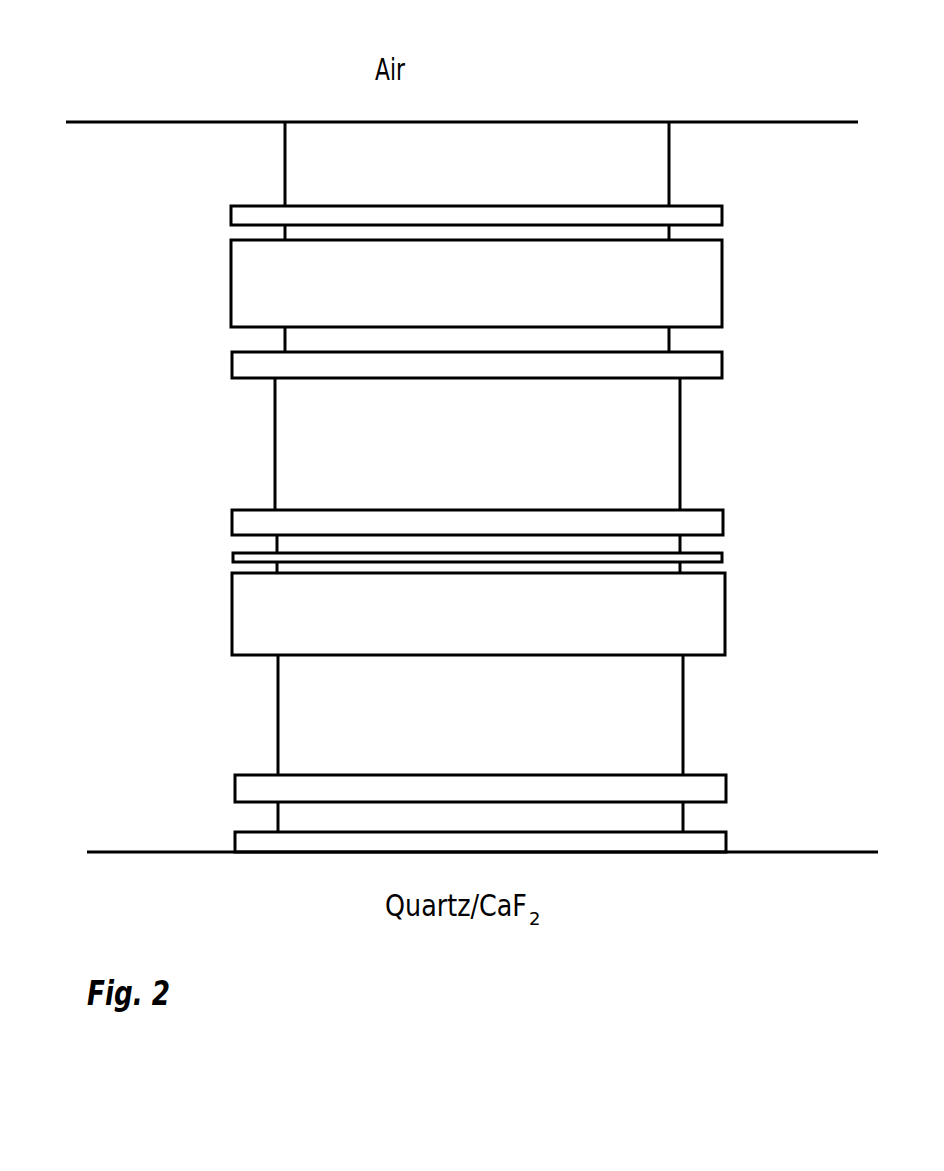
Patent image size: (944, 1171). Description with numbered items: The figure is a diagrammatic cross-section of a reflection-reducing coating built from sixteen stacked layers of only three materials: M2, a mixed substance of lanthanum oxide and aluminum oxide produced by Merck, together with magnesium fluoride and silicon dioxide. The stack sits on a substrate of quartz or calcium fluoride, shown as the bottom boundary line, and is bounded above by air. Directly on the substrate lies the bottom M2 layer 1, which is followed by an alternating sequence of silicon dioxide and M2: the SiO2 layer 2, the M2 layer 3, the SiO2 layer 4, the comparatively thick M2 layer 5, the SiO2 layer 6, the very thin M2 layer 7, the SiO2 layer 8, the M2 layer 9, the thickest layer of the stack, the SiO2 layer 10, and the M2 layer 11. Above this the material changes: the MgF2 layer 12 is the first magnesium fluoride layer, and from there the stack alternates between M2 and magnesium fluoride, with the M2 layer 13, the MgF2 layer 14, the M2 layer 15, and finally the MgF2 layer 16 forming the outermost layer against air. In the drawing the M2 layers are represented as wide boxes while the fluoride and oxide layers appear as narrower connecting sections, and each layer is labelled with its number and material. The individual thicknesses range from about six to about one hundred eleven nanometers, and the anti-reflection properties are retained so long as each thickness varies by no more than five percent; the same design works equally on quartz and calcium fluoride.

The M2 layer 1 is at (428, 839).
The SiO2 layer 2 is at (405, 817).
The M2 layer 3 is at (427, 788).
The SiO2 layer 4 is at (405, 715).
The M2 layer 5 is at (426, 614).
The SiO2 layer 6 is at (403, 567).
The M2 layer 7 is at (377, 556).
The SiO2 layer 8 is at (403, 545).
The M2 layer 9 is at (425, 522).
The SiO2 layer 10 is at (400, 444).
The M2 layer 11 is at (421, 365).
The MgF2 layer 12 is at (394, 340).
The M2 layer 13 is at (420, 283).
The MgF2 layer 14 is at (393, 235).
The M2 layer 15 is at (420, 215).
The MgF2 layer 16 is at (393, 164).